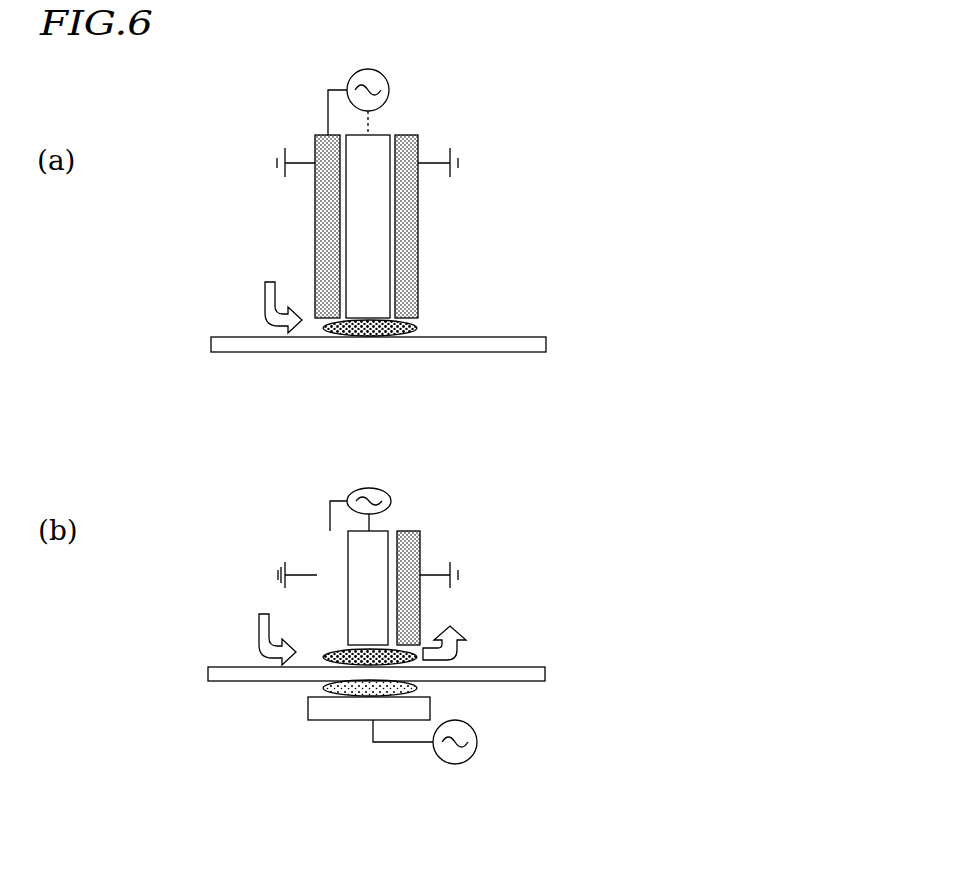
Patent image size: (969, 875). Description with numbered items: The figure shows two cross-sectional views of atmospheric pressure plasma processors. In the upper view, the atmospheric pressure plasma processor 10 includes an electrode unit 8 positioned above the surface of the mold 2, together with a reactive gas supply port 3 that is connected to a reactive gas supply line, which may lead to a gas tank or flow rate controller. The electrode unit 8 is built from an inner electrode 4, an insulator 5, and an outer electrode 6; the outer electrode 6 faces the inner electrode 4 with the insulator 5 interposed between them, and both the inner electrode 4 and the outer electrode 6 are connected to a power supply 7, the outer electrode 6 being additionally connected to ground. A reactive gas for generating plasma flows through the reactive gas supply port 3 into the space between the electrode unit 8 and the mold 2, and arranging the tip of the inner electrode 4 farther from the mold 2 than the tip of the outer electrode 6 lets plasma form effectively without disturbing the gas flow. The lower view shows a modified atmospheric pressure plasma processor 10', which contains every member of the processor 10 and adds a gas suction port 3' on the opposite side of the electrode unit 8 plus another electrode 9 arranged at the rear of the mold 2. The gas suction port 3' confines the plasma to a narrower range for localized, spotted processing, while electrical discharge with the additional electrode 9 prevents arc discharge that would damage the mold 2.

The mold 2 is at (540, 344).
The reactive gas supply port 3 is at (199, 457).
The gas suction port 3' is at (498, 627).
The inner electrode 4 is at (378, 146).
The insulator 5 is at (337, 152).
The outer electrode 6 is at (413, 240).
The power supply 7 is at (385, 80).
The electrode unit 8 is at (478, 114).
The electrode 9 is at (313, 708).
The atmospheric pressure plasma processor 10 is at (698, 77).
The atmospheric pressure plasma processor 10' is at (688, 480).